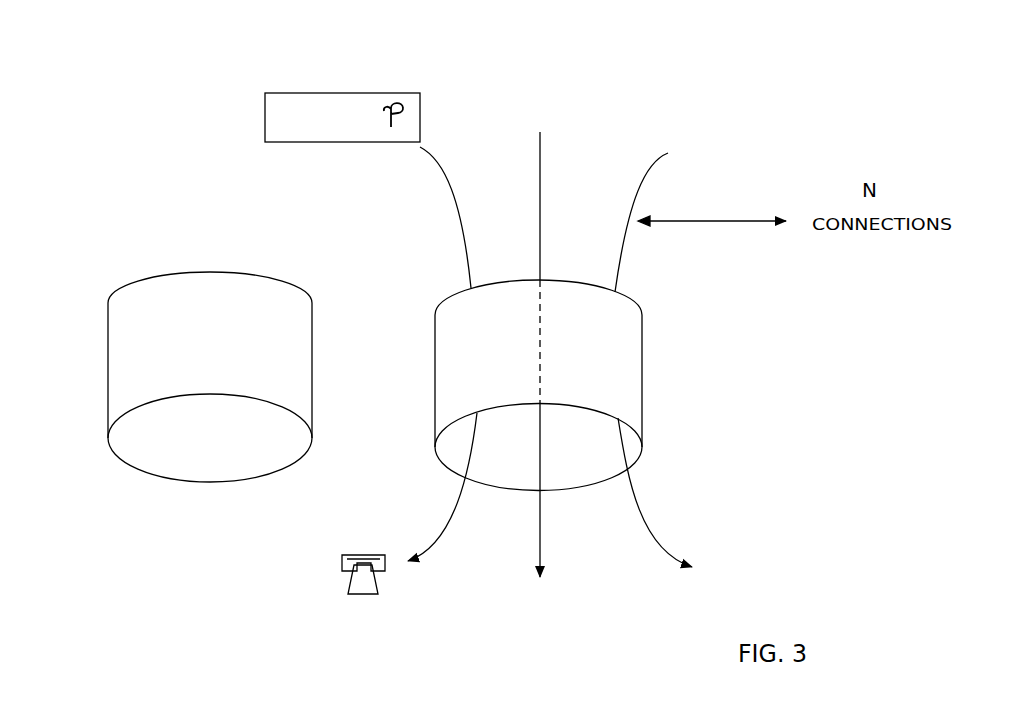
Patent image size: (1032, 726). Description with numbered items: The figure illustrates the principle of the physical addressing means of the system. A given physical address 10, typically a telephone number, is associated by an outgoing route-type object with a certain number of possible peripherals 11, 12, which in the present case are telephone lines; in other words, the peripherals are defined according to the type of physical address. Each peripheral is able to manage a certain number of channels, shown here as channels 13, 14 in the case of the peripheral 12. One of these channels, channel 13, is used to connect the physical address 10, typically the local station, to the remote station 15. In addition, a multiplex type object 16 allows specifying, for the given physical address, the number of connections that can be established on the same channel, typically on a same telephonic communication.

The physical address 10 is at (330, 98).
The peripheral 11 is at (123, 385).
The peripheral 12 is at (633, 357).
The channel 13 is at (452, 197).
The channel 14 is at (633, 187).
The remote station 15 is at (360, 580).
The multiplex type object 16 is at (722, 185).